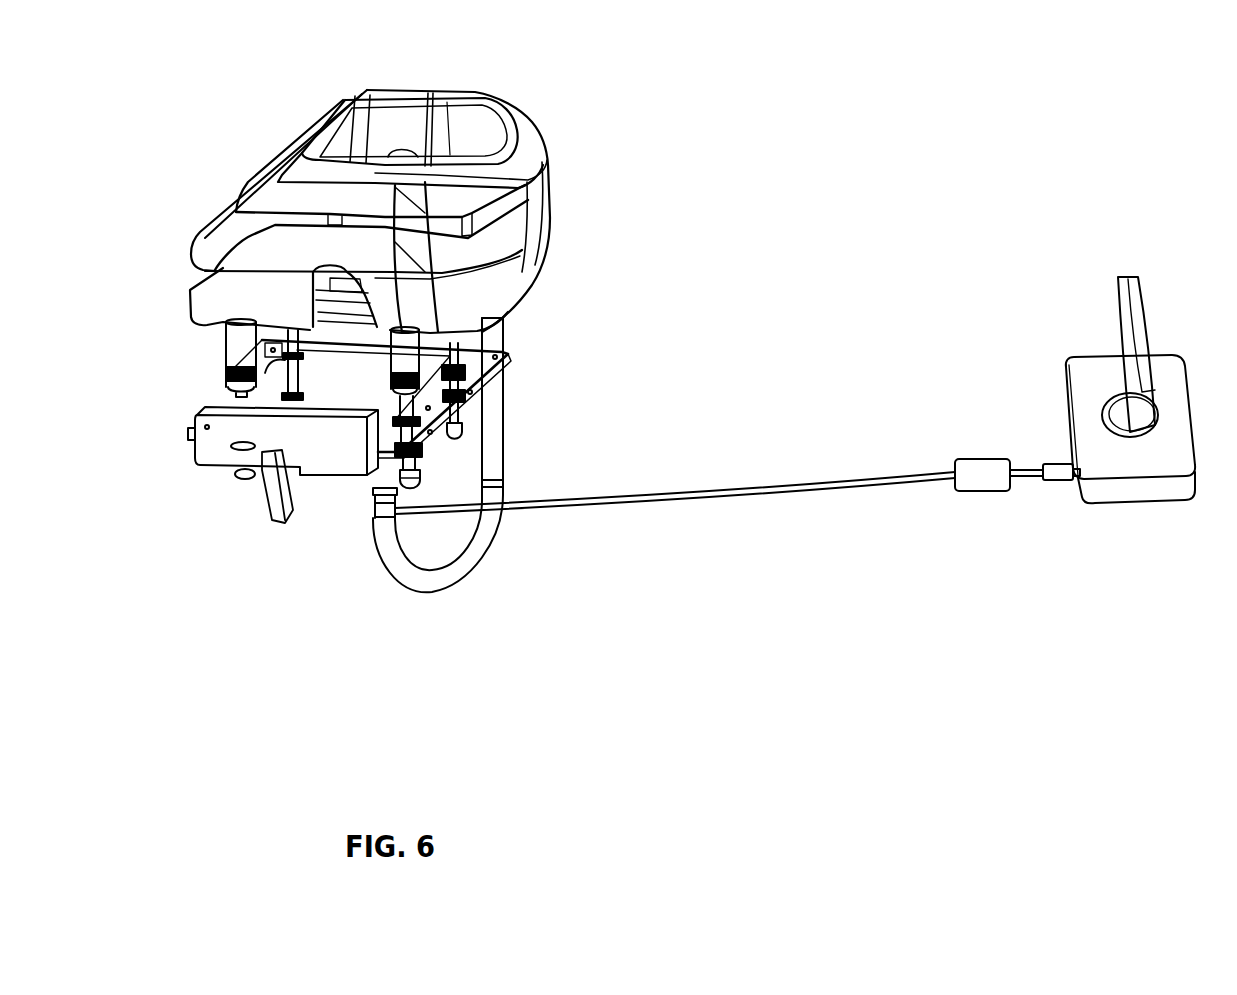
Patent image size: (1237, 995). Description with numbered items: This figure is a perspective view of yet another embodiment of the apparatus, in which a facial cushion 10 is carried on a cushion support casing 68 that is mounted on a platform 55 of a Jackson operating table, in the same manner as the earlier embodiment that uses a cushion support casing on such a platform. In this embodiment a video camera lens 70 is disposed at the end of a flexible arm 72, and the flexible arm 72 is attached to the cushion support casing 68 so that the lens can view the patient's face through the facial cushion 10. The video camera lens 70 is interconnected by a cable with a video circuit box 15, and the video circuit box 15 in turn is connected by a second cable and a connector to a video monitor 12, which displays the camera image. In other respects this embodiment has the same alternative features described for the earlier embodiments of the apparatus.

The facial cushion 10 is at (522, 137).
The cushion support casing 68 is at (492, 288).
The platform 55 is at (225, 430).
The video camera lens 70 is at (384, 510).
The flexible arm 72 is at (470, 550).
The video circuit box 15 is at (993, 485).
The video monitor 12 is at (1147, 313).